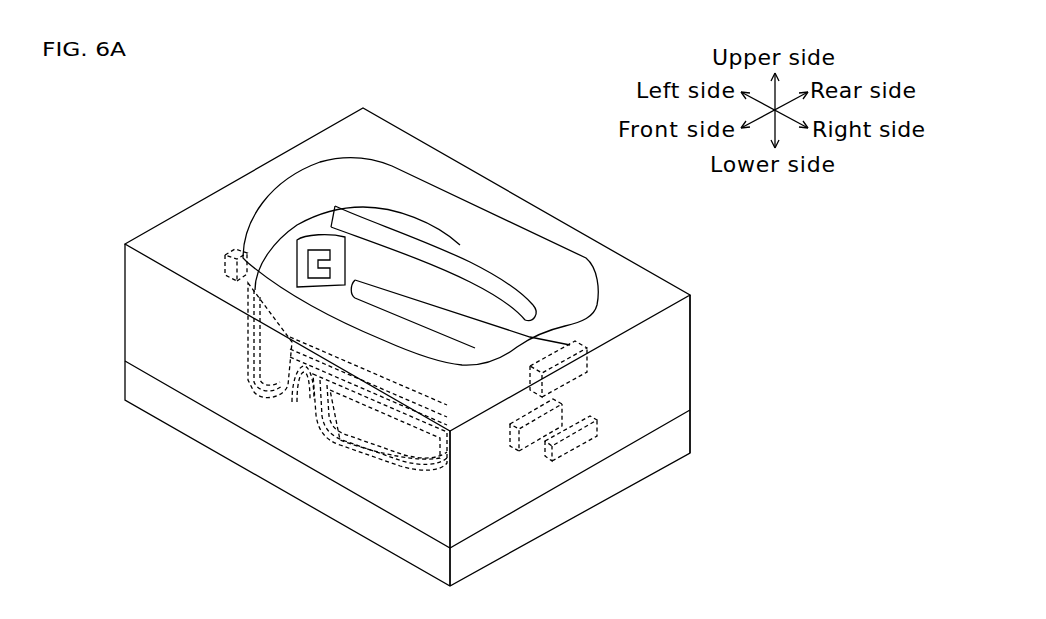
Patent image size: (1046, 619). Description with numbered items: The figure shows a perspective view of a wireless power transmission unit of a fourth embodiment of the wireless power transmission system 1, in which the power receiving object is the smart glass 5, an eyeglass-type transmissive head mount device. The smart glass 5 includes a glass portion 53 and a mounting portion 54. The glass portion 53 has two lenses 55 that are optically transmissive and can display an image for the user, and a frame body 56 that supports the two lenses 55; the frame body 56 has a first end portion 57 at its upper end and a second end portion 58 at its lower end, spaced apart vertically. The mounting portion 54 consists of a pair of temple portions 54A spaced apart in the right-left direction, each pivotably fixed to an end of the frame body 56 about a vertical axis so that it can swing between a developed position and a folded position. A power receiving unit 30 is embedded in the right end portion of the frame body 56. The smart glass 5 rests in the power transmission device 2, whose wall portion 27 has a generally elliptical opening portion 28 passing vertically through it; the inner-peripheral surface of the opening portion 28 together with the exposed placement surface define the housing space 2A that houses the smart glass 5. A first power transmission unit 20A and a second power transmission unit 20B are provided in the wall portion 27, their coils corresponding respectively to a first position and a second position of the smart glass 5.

The wireless power transmission system 1 is at (464, 614).
The power transmission device 2 is at (124, 277).
The housing space 2A is at (513, 257).
The smart glass 5 is at (437, 243).
The first power transmission unit 20A is at (577, 457).
The second power transmission unit 20B is at (237, 246).
The wall portion 27 is at (694, 354).
The opening portion 28 is at (348, 192).
The power receiving unit 30 is at (565, 412).
The glass portion 53 is at (355, 455).
The mounting portion 54 is at (450, 277).
The temple portions 54A is at (377, 222).
The lenses 55 is at (368, 418).
The frame body 56 is at (458, 455).
The first end portion 57 is at (408, 470).
The second end portion 58 is at (372, 420).